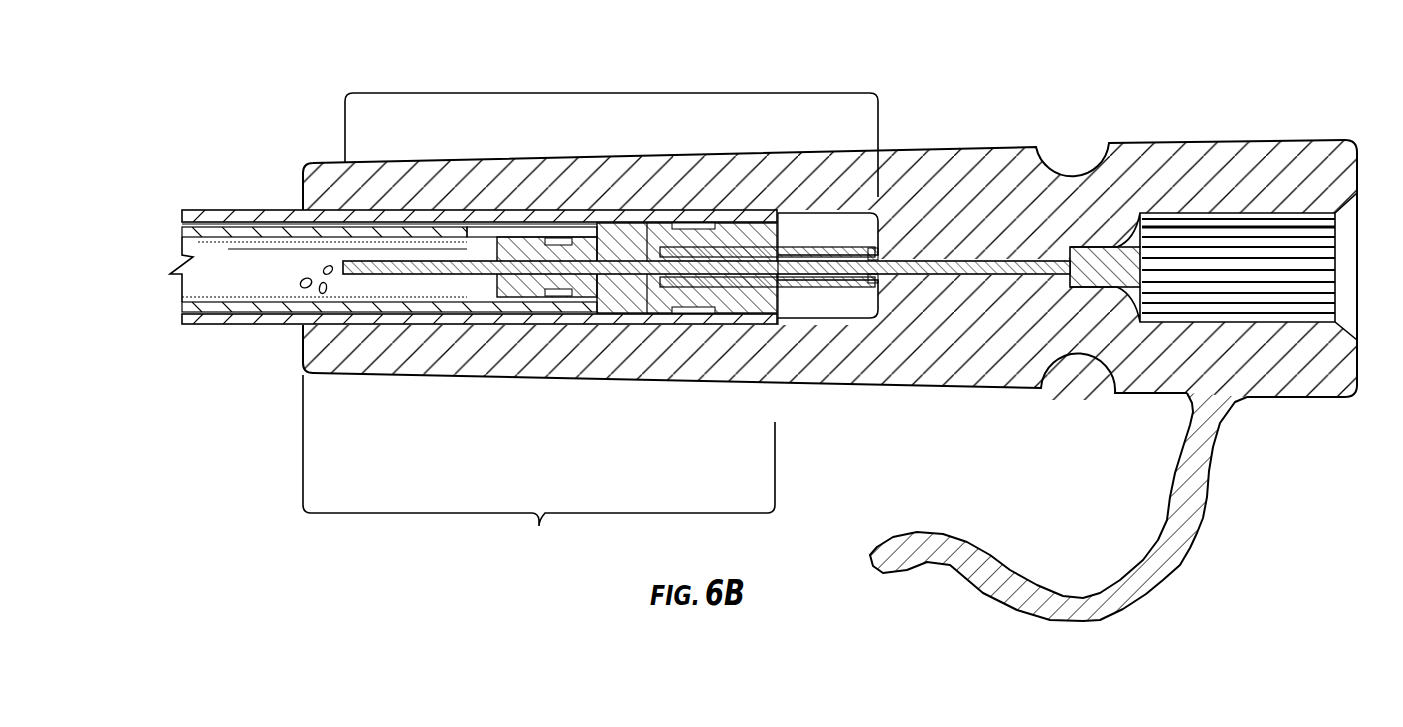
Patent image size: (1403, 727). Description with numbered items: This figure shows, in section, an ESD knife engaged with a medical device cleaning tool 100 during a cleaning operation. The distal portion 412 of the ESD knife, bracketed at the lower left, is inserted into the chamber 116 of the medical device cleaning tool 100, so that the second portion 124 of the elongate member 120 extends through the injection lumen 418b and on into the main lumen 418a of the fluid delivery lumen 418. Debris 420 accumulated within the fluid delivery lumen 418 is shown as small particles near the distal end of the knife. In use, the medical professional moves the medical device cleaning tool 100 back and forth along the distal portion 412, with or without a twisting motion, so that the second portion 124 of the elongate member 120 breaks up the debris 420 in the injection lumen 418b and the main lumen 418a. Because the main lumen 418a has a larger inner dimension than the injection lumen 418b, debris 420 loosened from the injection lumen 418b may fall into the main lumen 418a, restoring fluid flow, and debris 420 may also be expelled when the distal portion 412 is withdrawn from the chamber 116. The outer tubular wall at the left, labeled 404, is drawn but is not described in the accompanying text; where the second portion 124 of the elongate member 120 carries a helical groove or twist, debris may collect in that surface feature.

The medical device cleaning tool 100 is at (1089, 126).
The chamber 116 is at (826, 228).
The elongate member 120 is at (935, 265).
The second portion 124 is at (606, 93).
The outer tube 404 is at (203, 345).
The distal portion 412 is at (539, 470).
The fluid delivery lumen 418 is at (254, 255).
The main lumen 418a is at (324, 245).
The injection lumen 418b is at (620, 248).
The debris 420 is at (300, 288).